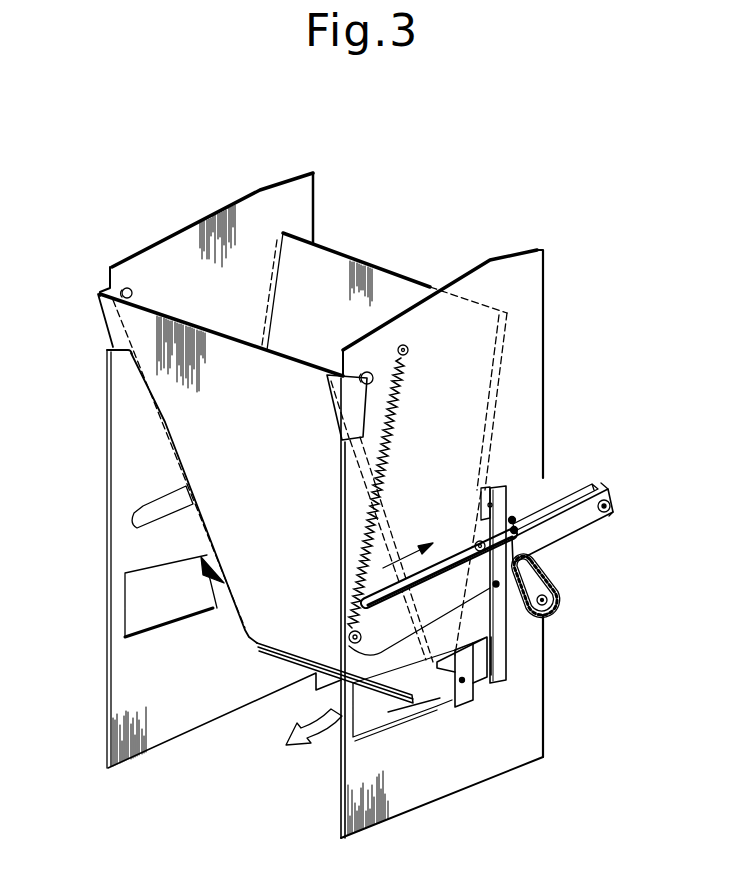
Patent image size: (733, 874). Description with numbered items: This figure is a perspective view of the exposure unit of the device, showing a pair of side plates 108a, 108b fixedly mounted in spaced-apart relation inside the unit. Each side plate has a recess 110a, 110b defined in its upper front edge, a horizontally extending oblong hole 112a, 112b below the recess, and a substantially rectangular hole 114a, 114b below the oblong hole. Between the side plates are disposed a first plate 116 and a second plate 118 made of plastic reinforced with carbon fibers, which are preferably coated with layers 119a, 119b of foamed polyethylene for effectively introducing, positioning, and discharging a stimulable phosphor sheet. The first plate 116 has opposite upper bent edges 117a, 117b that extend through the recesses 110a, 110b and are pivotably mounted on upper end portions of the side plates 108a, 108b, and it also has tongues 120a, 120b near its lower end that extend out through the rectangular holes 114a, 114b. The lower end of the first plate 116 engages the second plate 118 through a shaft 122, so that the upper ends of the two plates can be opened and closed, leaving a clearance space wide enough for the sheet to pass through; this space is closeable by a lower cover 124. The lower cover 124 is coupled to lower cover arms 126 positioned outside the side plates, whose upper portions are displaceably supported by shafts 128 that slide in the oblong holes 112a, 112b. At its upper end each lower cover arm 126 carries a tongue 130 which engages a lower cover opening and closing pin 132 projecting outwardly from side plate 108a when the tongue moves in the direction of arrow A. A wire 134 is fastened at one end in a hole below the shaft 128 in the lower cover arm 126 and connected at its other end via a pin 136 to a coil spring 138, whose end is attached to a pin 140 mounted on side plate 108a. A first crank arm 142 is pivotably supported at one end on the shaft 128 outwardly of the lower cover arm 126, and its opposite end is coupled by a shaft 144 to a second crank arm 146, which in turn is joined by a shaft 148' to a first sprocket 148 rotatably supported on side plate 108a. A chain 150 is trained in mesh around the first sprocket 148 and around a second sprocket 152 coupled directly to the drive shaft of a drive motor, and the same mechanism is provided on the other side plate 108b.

The side plate 108a is at (527, 277).
The side plate 108b is at (170, 255).
The recess 110a is at (340, 438).
The recess 110b is at (110, 348).
The oblong hole 112a is at (380, 590).
The oblong hole 112b is at (142, 508).
The rectangular hole 114a is at (387, 712).
The rectangular hole 114b is at (163, 618).
The first plate 116 is at (178, 398).
The upper bent edge 117a is at (375, 392).
The upper bent edge 117b is at (110, 288).
The second plate 118 is at (330, 267).
The foamed polyethylene layer 119a is at (380, 293).
The foamed polyethylene layer 119b is at (230, 373).
The tongue 120a is at (460, 697).
The tongue 120b is at (205, 557).
The shaft 122 is at (475, 694).
The lower cover 124 is at (317, 690).
The lower cover arm 126 is at (505, 656).
The shaft 128 is at (479, 541).
The tongue 130 is at (483, 486).
The lower cover opening and closing pin 132 is at (520, 490).
The wire 134 is at (341, 644).
The pin 136 is at (343, 640).
The coil spring 138 is at (400, 386).
The pin 140 is at (408, 350).
The first crank arm 142 is at (580, 526).
The shaft 144 is at (612, 506).
The second crank arm 146 is at (594, 485).
The first sprocket 148 is at (559, 459).
The shaft 148' is at (562, 479).
The chain 150 is at (556, 574).
The second sprocket 152 is at (558, 607).